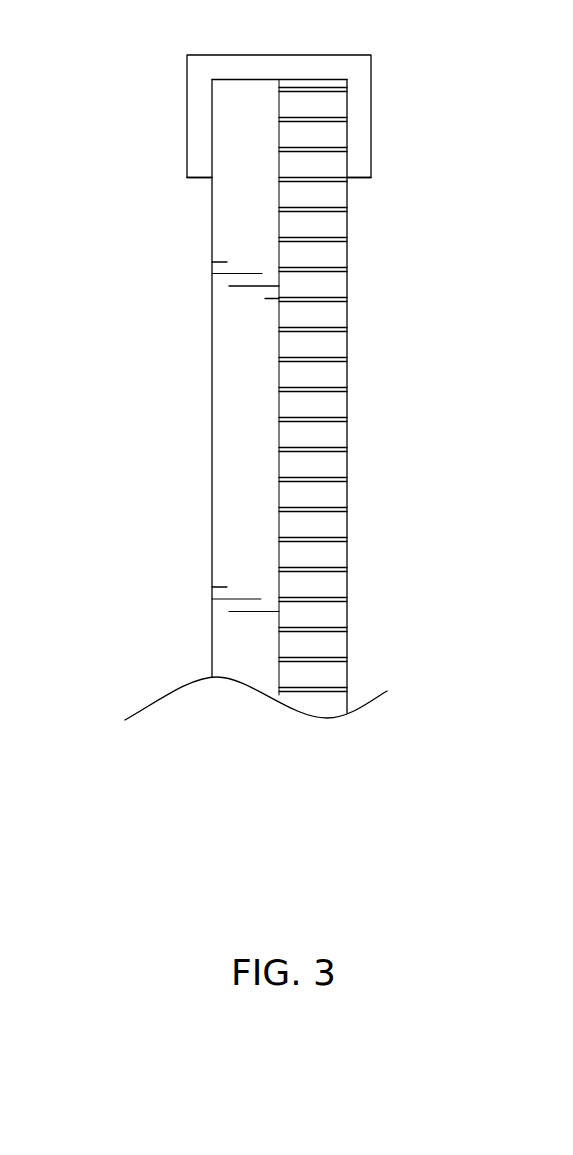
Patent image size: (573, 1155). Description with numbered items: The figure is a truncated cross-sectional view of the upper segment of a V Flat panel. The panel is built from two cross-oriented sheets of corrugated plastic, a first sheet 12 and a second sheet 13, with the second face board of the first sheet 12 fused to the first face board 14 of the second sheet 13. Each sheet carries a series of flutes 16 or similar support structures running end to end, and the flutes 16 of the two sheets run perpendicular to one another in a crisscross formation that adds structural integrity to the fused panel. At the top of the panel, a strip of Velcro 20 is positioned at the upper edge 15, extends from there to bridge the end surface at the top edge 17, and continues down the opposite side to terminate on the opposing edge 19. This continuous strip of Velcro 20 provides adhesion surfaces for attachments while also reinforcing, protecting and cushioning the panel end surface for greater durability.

The first sheet 12 is at (323, 405).
The second sheet 13 is at (233, 388).
The first face board 14 is at (350, 266).
The upper edge 15 is at (211, 179).
The flutes 16 is at (317, 513).
The top edge 17 is at (247, 79).
The opposing edge 19 is at (347, 178).
The strip of Velcro 20 is at (200, 110).